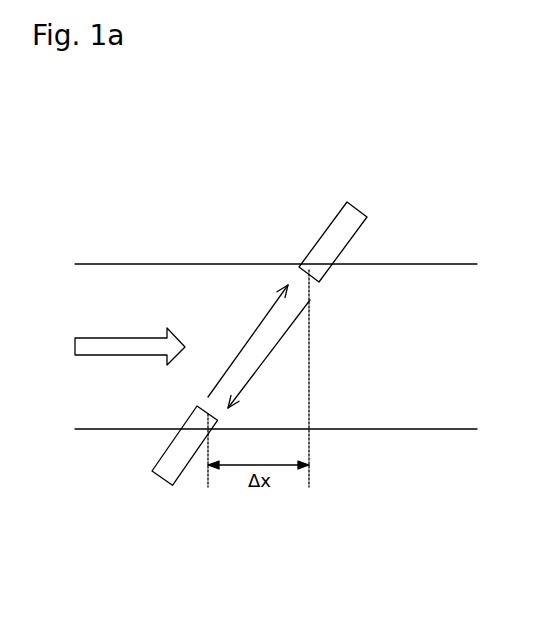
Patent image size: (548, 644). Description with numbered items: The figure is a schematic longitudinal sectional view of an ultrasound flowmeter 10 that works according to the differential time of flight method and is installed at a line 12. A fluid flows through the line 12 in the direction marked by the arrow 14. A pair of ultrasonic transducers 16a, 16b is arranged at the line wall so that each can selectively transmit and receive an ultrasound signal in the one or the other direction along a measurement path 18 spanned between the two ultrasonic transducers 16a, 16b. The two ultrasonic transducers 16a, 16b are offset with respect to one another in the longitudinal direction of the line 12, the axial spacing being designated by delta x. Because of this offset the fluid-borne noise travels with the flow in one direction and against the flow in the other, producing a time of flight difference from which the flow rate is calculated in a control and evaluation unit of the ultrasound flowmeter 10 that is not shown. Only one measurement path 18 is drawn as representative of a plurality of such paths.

The ultrasound flowmeter 10 is at (346, 117).
The line 12 is at (276, 310).
The arrow 14 is at (101, 366).
The ultrasonic transducer 16a is at (376, 226).
The ultrasonic transducer 16b is at (141, 456).
The measurement path 18 is at (256, 346).